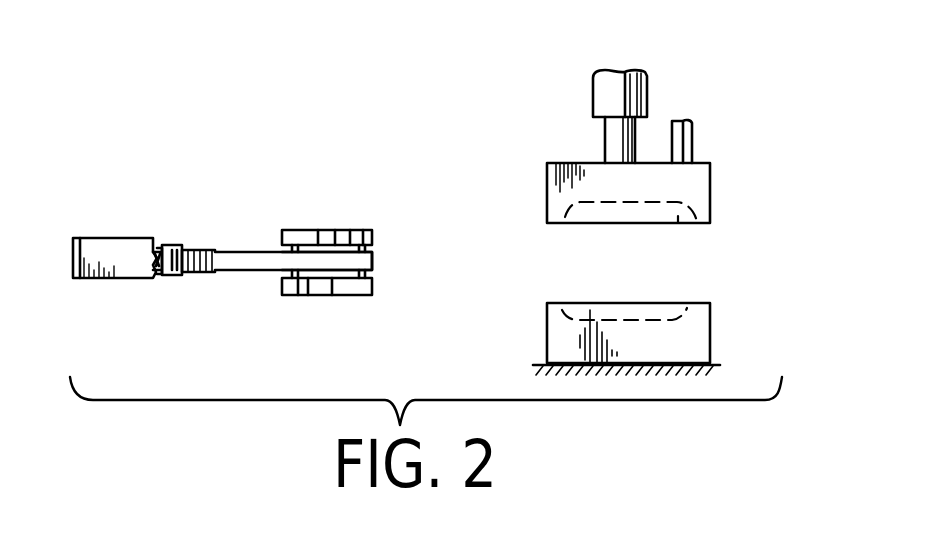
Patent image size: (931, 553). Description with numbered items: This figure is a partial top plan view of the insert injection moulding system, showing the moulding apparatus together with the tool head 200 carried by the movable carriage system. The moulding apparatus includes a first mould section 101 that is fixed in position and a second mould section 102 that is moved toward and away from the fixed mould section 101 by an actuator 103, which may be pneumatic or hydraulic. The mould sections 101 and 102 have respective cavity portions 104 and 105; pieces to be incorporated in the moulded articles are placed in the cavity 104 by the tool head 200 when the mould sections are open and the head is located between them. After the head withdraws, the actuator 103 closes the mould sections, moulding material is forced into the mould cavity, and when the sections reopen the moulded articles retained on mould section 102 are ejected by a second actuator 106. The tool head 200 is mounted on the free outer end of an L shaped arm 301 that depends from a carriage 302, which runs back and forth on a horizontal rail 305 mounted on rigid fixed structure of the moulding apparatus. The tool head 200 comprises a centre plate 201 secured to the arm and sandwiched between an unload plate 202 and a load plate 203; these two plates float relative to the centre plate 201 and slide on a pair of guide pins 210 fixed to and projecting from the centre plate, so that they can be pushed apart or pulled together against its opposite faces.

The fixed mould section 101 is at (636, 344).
The movable mould section 102 is at (635, 125).
The actuator 103 is at (600, 88).
The cavity portion 104 is at (680, 305).
The cavity portion 105 is at (680, 230).
The second actuator 106 is at (692, 133).
The tool head 200 is at (374, 223).
The centre plate 201 is at (370, 257).
The unload plate 202 is at (367, 230).
The load plate 203 is at (372, 285).
The guide pins 210 is at (367, 196).
The L shaped arm 301 is at (228, 257).
The carriage 302 is at (168, 260).
The horizontal rail 305 is at (105, 247).